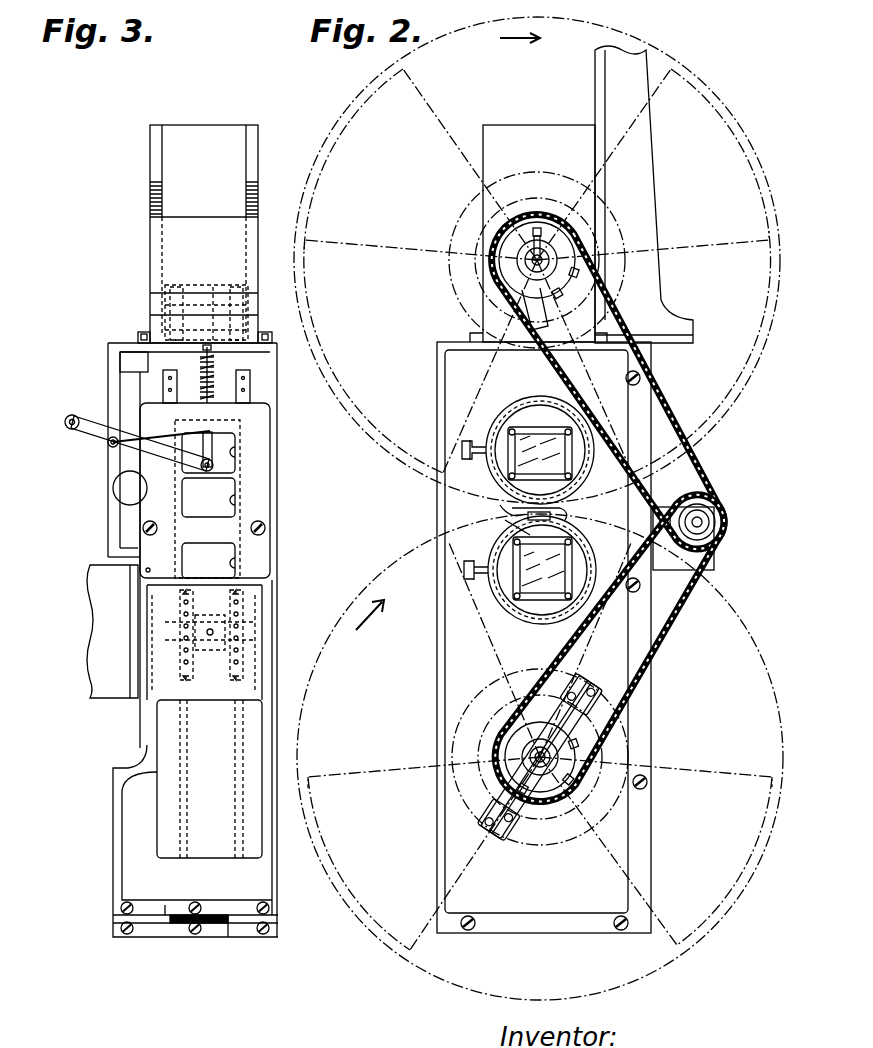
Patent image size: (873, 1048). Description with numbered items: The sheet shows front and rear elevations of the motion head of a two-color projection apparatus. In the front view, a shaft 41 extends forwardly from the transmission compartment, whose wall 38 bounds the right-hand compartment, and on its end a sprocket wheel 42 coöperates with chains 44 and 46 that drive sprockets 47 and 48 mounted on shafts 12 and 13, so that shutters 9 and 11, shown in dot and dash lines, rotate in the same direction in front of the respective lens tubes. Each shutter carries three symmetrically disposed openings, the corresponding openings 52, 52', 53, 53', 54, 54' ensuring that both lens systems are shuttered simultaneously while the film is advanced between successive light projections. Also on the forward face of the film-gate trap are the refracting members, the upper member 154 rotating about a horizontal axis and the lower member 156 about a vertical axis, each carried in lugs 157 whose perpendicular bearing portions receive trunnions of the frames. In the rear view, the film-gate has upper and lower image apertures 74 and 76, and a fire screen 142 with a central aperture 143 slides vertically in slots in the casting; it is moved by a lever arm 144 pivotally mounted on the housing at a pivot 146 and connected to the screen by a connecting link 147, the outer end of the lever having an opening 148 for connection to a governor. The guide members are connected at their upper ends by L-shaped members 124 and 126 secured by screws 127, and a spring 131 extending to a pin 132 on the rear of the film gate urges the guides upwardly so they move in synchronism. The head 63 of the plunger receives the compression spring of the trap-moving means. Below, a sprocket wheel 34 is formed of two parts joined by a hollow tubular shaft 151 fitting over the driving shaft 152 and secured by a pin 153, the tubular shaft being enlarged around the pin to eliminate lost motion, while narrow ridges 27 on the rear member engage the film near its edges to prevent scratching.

In FIG. 3, the pin 132 is at (213, 292).
In FIG. 3, the spring 131 is at (243, 342).
In FIG. 3, the screws 127 is at (140, 348).
In FIG. 3, the L-shaped member 124 is at (190, 398).
In FIG. 3, the L-shaped member 126 is at (222, 399).
In FIG. 3, the pivot 146 is at (112, 438).
In FIG. 3, the connecting link 147 is at (166, 467).
In FIG. 3, the opening 148 is at (70, 417).
In FIG. 3, the lever arm 144 is at (96, 446).
In FIG. 3, the head 63 is at (130, 489).
In FIG. 3, the image aperture 74 is at (238, 452).
In FIG. 3, the fire screen 142 is at (240, 470).
In FIG. 3, the aperture 143 is at (240, 504).
In FIG. 3, the image aperture 76 is at (238, 560).
In FIG. 3, the sprocket wheel 34 is at (248, 600).
In FIG. 3, the driving shaft 152 is at (228, 620).
In FIG. 3, the pin 153 is at (228, 633).
In FIG. 3, the hollow tubular shaft 151 is at (210, 649).
In FIG. 3, the narrow ridges 27 is at (240, 777).
In FIG. 2, the shutter 9 is at (760, 340).
In FIG. 2, the shutter 11 is at (770, 695).
In FIG. 2, the opening 54 is at (420, 271).
In FIG. 2, the opening 53 is at (654, 271).
In FIG. 2, the opening 52 is at (490, 366).
In FIG. 2, the opening 54' is at (424, 848).
In FIG. 2, the opening 53' is at (656, 864).
In FIG. 2, the opening 52' is at (494, 650).
In FIG. 2, the left-hand wall of the right-hand compartment 38 is at (655, 697).
In FIG. 2, the sprocket 47 is at (538, 216).
In FIG. 2, the shaft 12 is at (535, 262).
In FIG. 2, the shaft 13 is at (536, 757).
In FIG. 2, the sprocket 48 is at (548, 800).
In FIG. 2, the sprocket wheel 42 is at (718, 502).
In FIG. 2, the shaft 41 is at (712, 521).
In FIG. 2, the chain 44 is at (660, 404).
In FIG. 2, the chain 46 is at (665, 639).
In FIG. 2, the upper refracting member 154 is at (536, 438).
In FIG. 2, the lower refracting member 156 is at (540, 574).
In FIG. 2, the lugs 157 is at (508, 520).